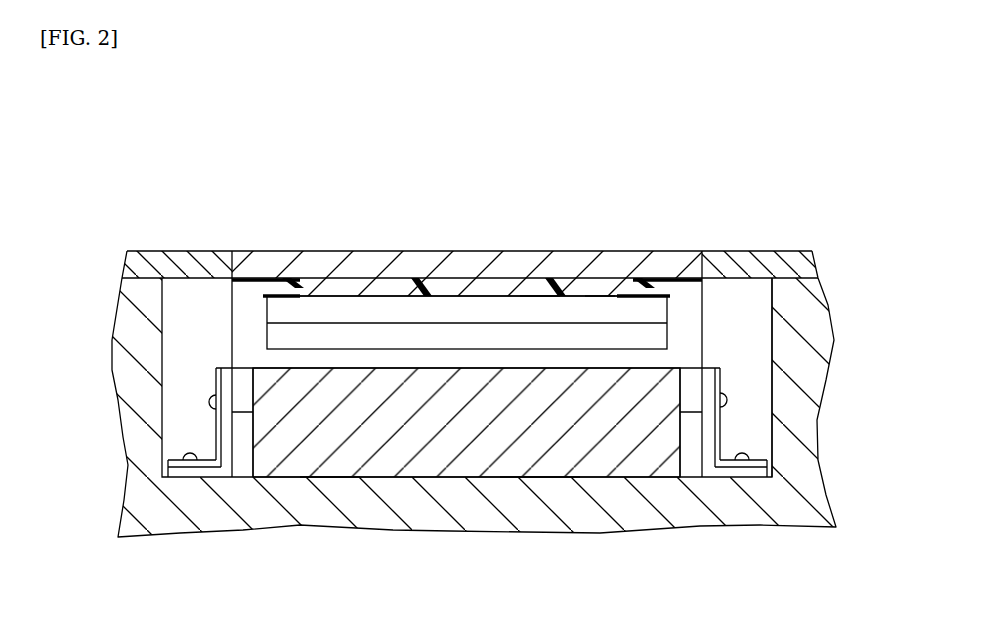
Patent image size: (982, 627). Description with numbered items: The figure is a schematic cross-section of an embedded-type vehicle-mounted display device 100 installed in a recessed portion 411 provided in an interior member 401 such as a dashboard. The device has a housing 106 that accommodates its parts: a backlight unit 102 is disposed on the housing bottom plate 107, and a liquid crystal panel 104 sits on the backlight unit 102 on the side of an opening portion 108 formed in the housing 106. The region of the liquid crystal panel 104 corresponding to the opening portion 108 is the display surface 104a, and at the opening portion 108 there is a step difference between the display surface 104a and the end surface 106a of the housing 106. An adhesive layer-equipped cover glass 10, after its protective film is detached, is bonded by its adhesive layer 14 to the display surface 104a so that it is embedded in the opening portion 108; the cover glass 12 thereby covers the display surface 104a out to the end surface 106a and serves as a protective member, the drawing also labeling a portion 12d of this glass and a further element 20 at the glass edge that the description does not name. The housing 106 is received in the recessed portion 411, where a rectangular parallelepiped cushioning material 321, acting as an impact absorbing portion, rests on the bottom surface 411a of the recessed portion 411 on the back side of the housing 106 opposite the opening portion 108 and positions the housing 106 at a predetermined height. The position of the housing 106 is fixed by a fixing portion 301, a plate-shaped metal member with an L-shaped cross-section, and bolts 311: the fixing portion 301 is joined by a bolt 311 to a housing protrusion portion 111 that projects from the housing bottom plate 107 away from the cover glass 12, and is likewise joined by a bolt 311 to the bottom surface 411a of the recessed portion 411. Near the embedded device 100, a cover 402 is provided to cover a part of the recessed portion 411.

The vehicle-mounted display device 100 is at (778, 185).
The adhesive layer-equipped cover glass 10 is at (501, 236).
The cover glass 12 is at (501, 238).
The step portion of cover glass 12d is at (508, 262).
The adhesive layer 14 is at (440, 283).
The sealing member 20 is at (268, 278).
The backlight unit 102 is at (313, 340).
The liquid crystal panel 104 is at (372, 292).
The display surface 104a is at (530, 293).
The housing 106 is at (704, 361).
The end surface 106a is at (232, 279).
The housing bottom plate 107 is at (436, 372).
The opening portion 108 is at (597, 285).
The housing protrusion portion 111 is at (253, 392).
The fixing portion 301 is at (197, 478).
The bolt 311 is at (188, 455).
The cushioning material 321 is at (334, 447).
The interior member 401 is at (710, 517).
The cover 402 is at (165, 251).
The recessed portion 411 is at (752, 401).
The bottom surface 411a is at (540, 468).